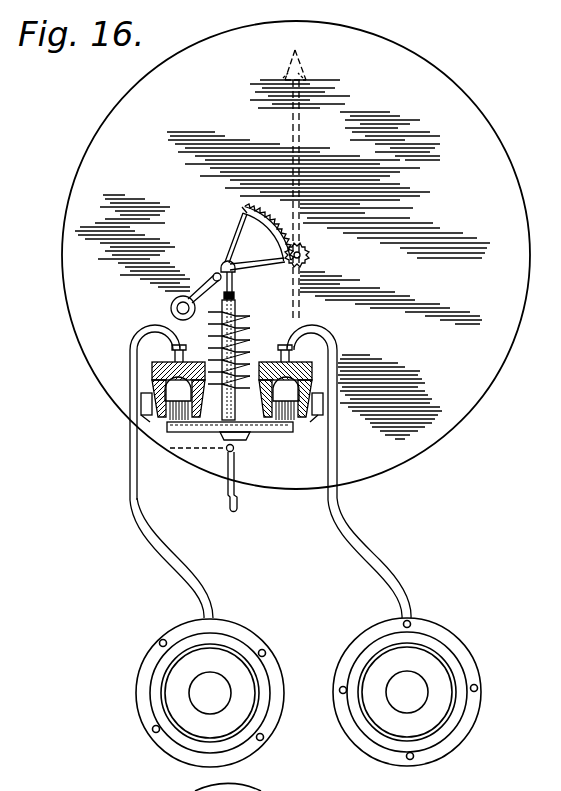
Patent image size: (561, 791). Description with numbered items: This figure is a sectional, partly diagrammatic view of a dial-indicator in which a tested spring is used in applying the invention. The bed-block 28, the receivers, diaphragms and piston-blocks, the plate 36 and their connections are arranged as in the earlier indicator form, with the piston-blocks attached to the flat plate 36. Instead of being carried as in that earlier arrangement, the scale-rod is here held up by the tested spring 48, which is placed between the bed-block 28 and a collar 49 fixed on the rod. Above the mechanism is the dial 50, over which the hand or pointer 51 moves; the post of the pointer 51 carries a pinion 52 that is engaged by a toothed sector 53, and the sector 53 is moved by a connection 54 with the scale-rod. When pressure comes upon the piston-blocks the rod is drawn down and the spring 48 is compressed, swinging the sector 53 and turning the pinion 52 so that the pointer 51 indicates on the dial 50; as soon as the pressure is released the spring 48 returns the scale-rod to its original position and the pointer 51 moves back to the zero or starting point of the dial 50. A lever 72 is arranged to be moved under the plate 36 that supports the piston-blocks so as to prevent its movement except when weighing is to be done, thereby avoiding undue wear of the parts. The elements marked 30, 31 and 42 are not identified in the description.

The bed-block 28 is at (309, 395).
The electromagnet coil 30 is at (232, 380).
The magnet core 31 is at (232, 398).
The plate 36 is at (226, 440).
The bracket 42 is at (170, 421).
The tested spring 48 is at (250, 330).
The collar 49 is at (243, 318).
The dial 50 is at (296, 255).
The hand or pointer 51 is at (296, 140).
The pinion 52 is at (309, 255).
The toothed sector 53 is at (259, 237).
The connection 54 is at (233, 289).
The lever 72 is at (238, 472).